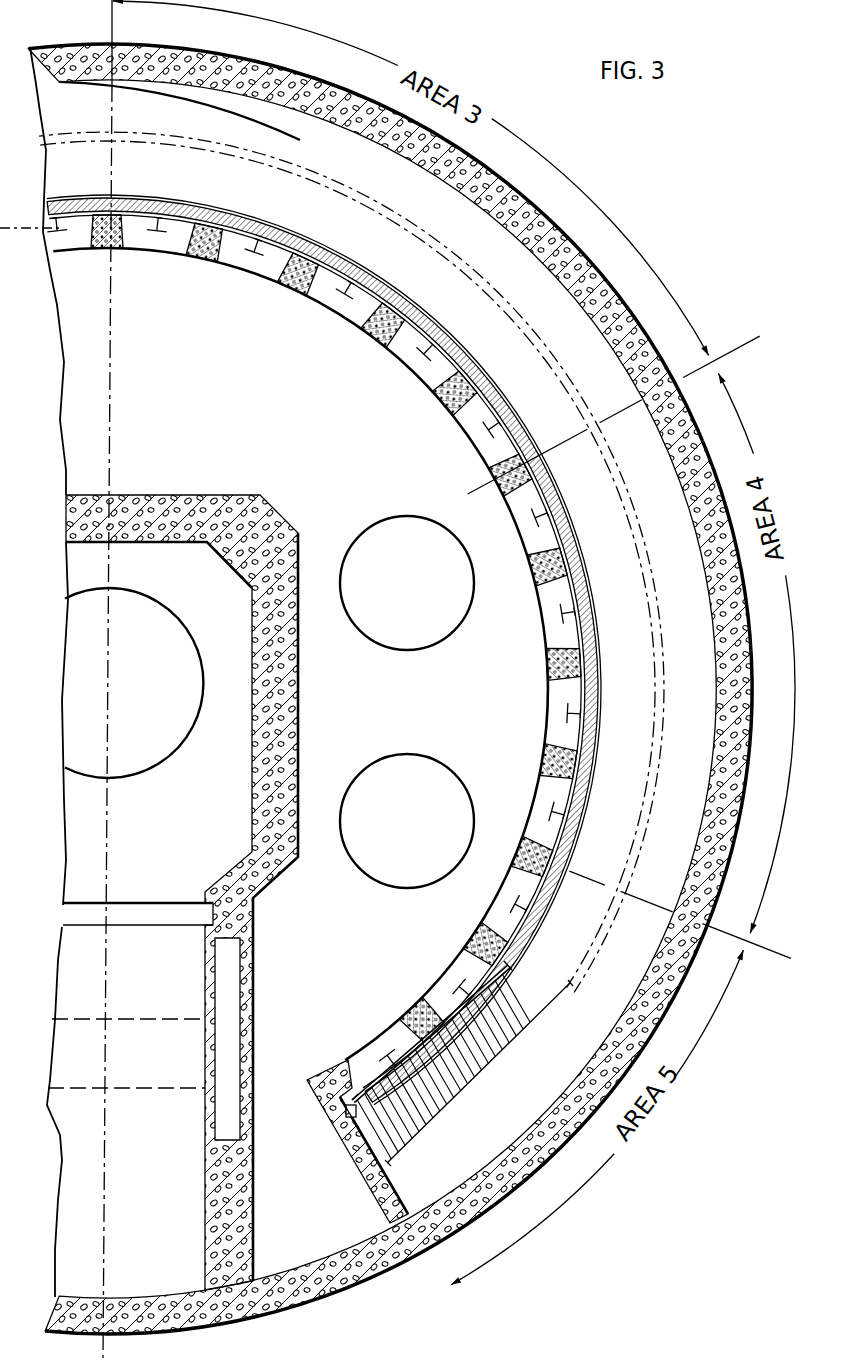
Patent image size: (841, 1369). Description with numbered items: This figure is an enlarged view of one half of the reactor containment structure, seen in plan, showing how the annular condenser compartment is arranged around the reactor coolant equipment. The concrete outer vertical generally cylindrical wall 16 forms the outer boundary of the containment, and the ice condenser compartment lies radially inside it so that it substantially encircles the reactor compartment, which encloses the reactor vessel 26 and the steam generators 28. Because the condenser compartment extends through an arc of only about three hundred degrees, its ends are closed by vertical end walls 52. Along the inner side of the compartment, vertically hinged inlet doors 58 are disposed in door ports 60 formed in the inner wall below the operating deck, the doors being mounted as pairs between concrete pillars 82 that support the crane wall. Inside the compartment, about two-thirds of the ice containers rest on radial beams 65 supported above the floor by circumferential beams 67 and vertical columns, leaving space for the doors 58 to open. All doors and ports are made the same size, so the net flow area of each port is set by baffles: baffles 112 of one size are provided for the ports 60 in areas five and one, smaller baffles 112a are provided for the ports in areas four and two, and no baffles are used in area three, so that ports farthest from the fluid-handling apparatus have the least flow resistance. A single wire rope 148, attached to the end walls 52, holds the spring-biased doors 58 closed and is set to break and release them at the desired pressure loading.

The outer vertical generally cylindrical wall 16 is at (308, 1301).
The reactor vessel 26 is at (174, 628).
The steam generators 28 is at (413, 753).
The vertical end walls 52 is at (353, 1150).
The inlet doors 58 is at (566, 636).
The door ports 60 is at (272, 262).
The radial beams 65 is at (517, 971).
The circumferential beams 67 is at (560, 1004).
The concrete pillars 82 is at (392, 336).
The baffles 112 is at (520, 899).
The baffles of a smaller size 112a is at (566, 714).
The wire rope 148 is at (597, 698).